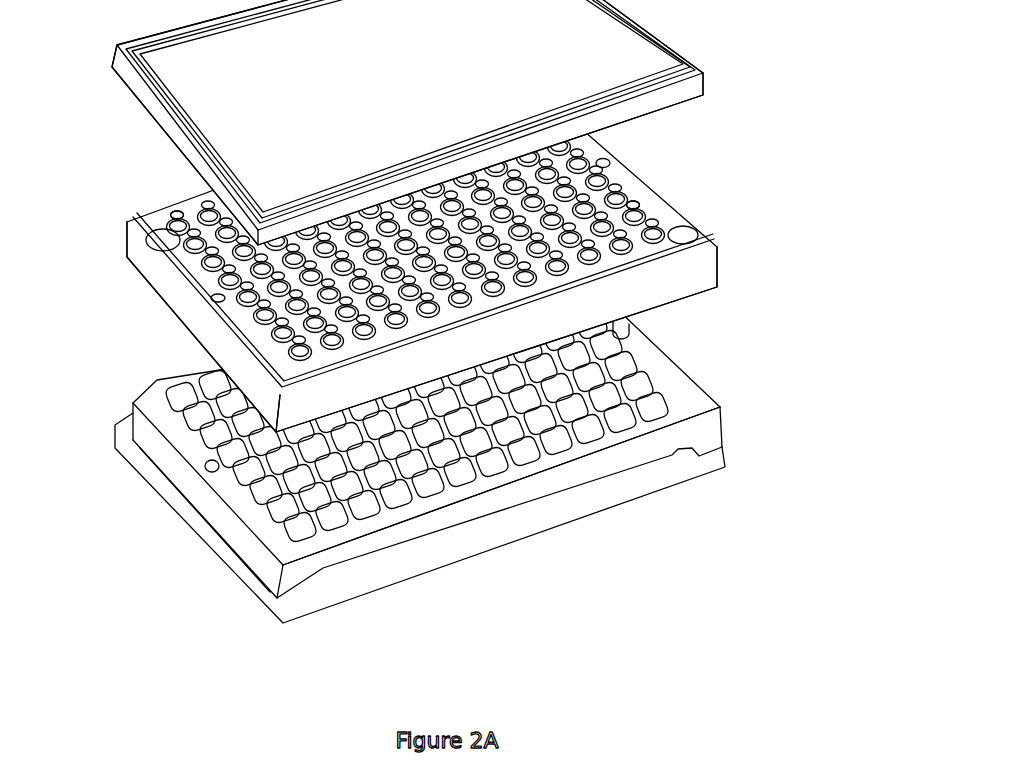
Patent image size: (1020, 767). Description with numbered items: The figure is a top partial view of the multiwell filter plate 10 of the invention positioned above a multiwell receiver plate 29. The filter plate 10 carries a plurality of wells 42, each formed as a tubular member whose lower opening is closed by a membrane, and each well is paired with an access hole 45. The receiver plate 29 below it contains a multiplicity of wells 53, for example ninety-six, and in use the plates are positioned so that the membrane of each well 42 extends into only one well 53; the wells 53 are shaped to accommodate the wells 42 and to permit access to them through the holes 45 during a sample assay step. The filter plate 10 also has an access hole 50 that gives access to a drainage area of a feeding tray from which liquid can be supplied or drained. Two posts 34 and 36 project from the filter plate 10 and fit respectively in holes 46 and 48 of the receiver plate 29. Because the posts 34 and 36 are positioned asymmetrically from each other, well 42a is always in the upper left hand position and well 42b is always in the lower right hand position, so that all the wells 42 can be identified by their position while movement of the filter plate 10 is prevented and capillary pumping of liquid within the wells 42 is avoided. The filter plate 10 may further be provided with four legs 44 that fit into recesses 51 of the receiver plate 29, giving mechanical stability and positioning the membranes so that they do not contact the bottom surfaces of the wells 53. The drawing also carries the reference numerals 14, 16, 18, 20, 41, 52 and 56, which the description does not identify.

The multiwell filter plate 10 is at (790, 150).
The base tray 14 is at (668, 382).
The tray floor 16 is at (480, 492).
The tray side wall 18 is at (252, 514).
The well pocket 20 is at (670, 421).
The multiwell receiver plate 29 is at (733, 384).
The post 34 is at (140, 275).
The post 36 is at (603, 162).
The alignment hole 41 is at (205, 292).
The wells 42 is at (655, 210).
The well 42a is at (180, 226).
The well 42b is at (665, 237).
The legs 44 is at (128, 282).
The access hole 45 is at (172, 214).
The hole 46 is at (205, 465).
The hole 48 is at (628, 333).
The access hole 50 is at (686, 236).
The recesses 51 is at (124, 422).
The corner hole 52 is at (160, 240).
The wells 53 is at (653, 412).
The lid 56 is at (427, 107).